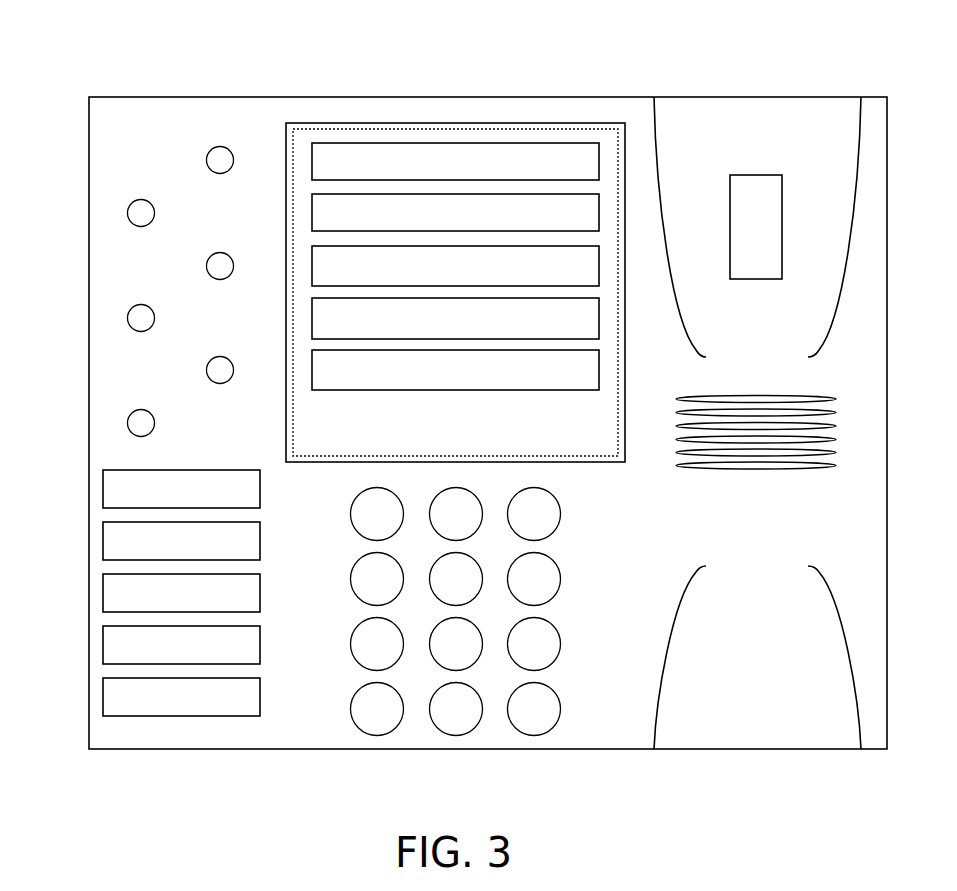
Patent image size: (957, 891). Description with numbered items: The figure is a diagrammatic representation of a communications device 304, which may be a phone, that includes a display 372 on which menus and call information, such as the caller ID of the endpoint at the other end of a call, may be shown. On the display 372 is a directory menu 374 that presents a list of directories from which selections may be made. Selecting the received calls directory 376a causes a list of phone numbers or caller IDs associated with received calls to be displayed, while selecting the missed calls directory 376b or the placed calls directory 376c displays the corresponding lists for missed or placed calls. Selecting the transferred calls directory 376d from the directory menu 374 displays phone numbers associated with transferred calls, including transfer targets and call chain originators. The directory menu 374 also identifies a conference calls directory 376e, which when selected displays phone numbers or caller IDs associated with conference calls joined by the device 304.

The communications device 304 is at (100, 50).
The display 372 is at (545, 123).
The directory menu 374 is at (360, 128).
The received calls directory 376a is at (441, 142).
The missed calls directory 376b is at (312, 216).
The placed calls directory 376c is at (312, 262).
The transferred calls directory 376d is at (312, 320).
The conference calls directory 376e is at (312, 374).